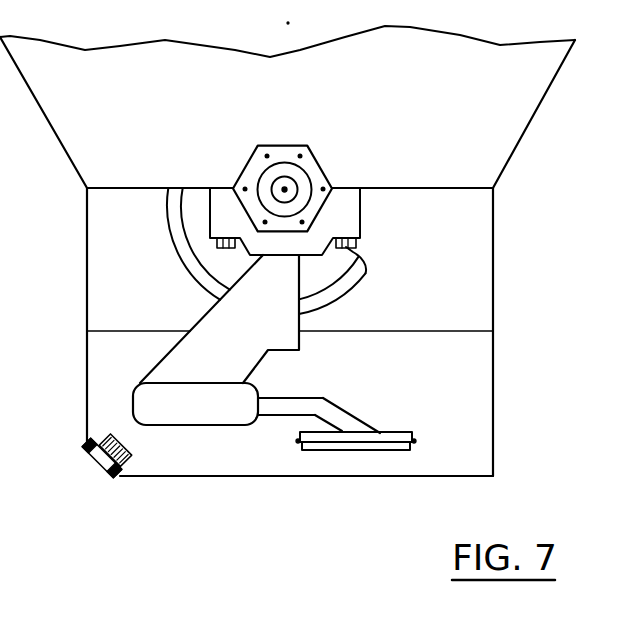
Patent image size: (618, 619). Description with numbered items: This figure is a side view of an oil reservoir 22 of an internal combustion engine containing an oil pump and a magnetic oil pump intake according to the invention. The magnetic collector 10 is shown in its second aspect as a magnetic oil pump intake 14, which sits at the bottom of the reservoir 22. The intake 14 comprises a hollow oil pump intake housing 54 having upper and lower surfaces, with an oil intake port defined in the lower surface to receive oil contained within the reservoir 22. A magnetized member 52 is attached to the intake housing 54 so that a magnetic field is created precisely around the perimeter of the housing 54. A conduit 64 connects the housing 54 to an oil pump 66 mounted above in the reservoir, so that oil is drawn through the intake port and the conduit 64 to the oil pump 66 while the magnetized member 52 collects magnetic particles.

The magnetic collector 10 is at (440, 430).
The magnetic oil pump intake 14 is at (402, 462).
The oil reservoir 22 is at (494, 278).
The magnetized member 52 is at (347, 452).
The oil pump intake housing 54 is at (380, 436).
The conduit 64 is at (293, 402).
The oil pump 66 is at (145, 407).